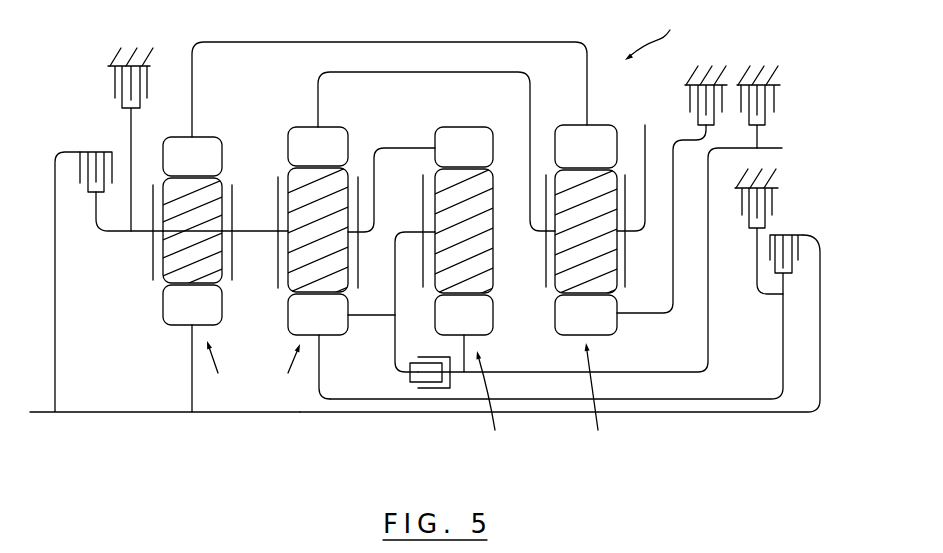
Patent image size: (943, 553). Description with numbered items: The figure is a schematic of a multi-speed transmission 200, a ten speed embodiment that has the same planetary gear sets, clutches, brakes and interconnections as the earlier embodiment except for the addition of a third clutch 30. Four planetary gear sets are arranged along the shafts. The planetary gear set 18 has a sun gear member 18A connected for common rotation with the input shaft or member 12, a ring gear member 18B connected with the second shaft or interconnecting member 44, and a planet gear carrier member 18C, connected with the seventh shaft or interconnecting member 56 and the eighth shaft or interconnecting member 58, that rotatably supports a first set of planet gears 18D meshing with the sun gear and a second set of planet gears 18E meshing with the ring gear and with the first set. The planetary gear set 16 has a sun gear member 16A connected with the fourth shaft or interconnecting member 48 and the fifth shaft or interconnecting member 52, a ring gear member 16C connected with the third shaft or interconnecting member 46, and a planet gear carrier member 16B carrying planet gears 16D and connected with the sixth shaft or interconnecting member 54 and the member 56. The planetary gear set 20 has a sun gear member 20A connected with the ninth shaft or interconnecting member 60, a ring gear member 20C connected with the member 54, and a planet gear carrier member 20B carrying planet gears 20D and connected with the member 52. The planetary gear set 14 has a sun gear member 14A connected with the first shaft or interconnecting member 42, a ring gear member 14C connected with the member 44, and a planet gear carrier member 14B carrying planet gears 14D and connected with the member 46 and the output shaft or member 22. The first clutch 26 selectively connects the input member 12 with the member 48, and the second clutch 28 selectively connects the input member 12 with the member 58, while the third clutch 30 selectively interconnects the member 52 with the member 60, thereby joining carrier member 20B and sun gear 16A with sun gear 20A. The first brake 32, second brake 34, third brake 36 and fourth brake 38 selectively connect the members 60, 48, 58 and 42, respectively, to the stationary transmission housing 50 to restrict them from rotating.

The input shaft or member 12 is at (99, 413).
The planetary gear set 14 is at (590, 291).
The sun gear member 14A is at (568, 328).
The planet gear carrier member 14B is at (545, 280).
The ring gear member 14C is at (568, 160).
The planet gears 14D is at (568, 244).
The planetary gear set 16 is at (330, 263).
The sun gear member 16A is at (300, 328).
The planet gear carrier member 16B is at (279, 183).
The ring gear member 16C is at (300, 160).
The planet gears 16D is at (300, 244).
The planetary gear set 18 is at (189, 274).
The sun gear member 18A is at (174, 318).
The ring gear member 18B is at (174, 170).
The planet gear carrier member 18C is at (152, 258).
The first set of planet gears 18D is at (174, 260).
The second set of planet gears 18E is at (174, 209).
The planetary gear set 20 is at (440, 289).
The sun gear member 20A is at (446, 328).
The planet gear carrier member 20B is at (423, 183).
The ring gear member 20C is at (446, 160).
The planet gears 20D is at (446, 244).
The output shaft or member 22 is at (642, 132).
The first clutch 26 is at (770, 250).
The second clutch 28 is at (80, 173).
The third clutch 30 is at (437, 388).
The first brake 32 is at (774, 102).
The second brake 34 is at (775, 206).
The third brake 36 is at (112, 85).
The fourth brake 38 is at (690, 100).
The first shaft or interconnecting member 42 is at (717, 312).
The second shaft or interconnecting member 44 is at (447, 42).
The third shaft or interconnecting member 46 is at (500, 70).
The fourth shaft or interconnecting member 48 is at (722, 404).
The transmission housing 50 is at (113, 63).
The fifth shaft or interconnecting member 52 is at (395, 352).
The sixth shaft or interconnecting member 54 is at (368, 167).
The seventh shaft or interconnecting member 56 is at (258, 231).
The eighth shaft or interconnecting member 58 is at (118, 233).
The ninth shaft or interconnecting member 60 is at (710, 335).
The multi-speed transmission 200 is at (661, 34).